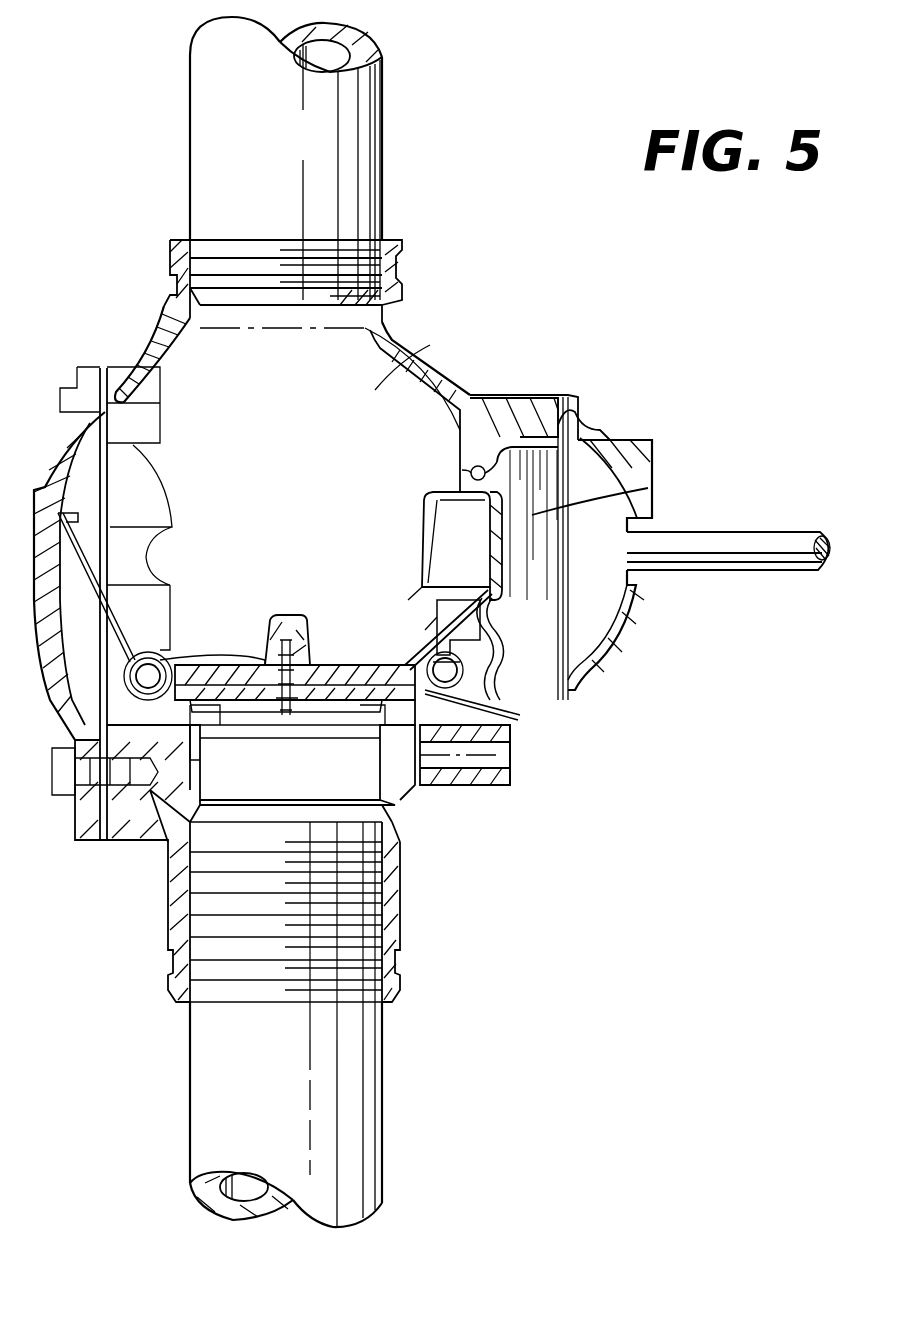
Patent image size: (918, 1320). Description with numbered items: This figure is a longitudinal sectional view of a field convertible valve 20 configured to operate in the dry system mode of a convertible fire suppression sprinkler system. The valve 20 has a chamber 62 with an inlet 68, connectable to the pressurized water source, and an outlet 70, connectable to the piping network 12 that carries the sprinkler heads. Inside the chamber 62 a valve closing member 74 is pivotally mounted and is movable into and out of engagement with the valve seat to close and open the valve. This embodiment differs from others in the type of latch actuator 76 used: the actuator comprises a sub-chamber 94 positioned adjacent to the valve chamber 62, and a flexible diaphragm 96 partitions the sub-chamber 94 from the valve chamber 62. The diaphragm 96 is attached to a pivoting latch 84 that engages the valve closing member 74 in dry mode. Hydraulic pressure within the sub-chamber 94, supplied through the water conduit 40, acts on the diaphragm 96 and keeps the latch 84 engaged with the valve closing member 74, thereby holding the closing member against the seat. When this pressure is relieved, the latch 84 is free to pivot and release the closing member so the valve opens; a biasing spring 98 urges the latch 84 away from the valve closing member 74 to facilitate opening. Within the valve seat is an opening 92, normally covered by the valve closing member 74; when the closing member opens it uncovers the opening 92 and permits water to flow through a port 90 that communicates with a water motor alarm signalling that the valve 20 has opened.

The piping network 12 is at (370, 92).
The field convertible valve 20 is at (440, 360).
The water conduit 40 is at (735, 540).
The chamber 62 is at (375, 390).
The inlet 68 is at (175, 985).
The outlet 70 is at (170, 262).
The valve closing member 74 is at (292, 615).
The latch actuator 76 is at (584, 428).
The latch 84 is at (433, 516).
The port 90 is at (505, 752).
The opening 92 is at (360, 750).
The sub-chamber 94 is at (648, 488).
The flexible diaphragm 96 is at (598, 468).
The biasing spring 98 is at (520, 720).